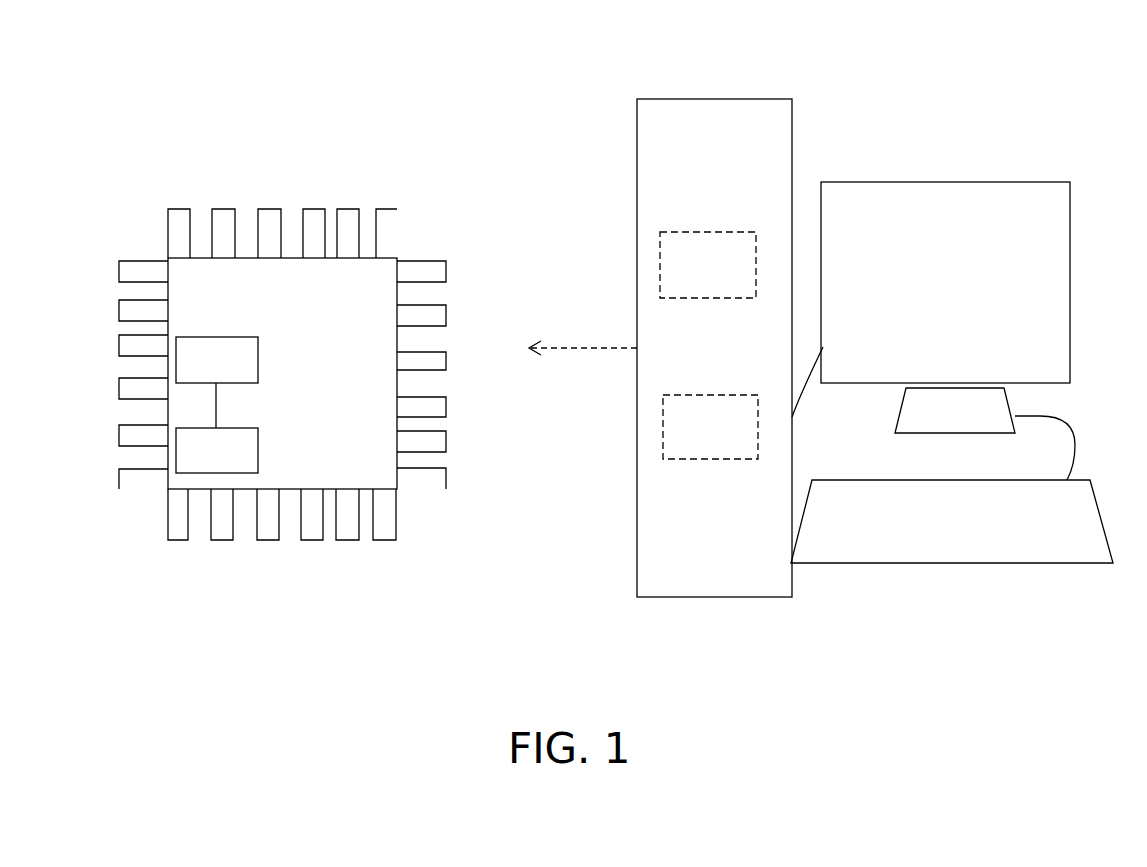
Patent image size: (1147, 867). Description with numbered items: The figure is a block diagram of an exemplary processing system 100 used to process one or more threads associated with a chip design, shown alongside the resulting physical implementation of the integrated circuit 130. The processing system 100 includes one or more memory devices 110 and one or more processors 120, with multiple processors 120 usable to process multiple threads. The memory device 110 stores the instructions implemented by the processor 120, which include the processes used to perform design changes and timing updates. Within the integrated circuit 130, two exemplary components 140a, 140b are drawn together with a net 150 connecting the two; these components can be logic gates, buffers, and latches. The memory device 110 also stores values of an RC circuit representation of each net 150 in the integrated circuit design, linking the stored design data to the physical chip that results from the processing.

The processing system 100 is at (961, 123).
The memory device 110 is at (708, 265).
The processor 120 is at (710, 427).
The integrated circuit 130 is at (253, 313).
The component 140a is at (241, 465).
The component 140b is at (241, 372).
The net 150 is at (212, 414).